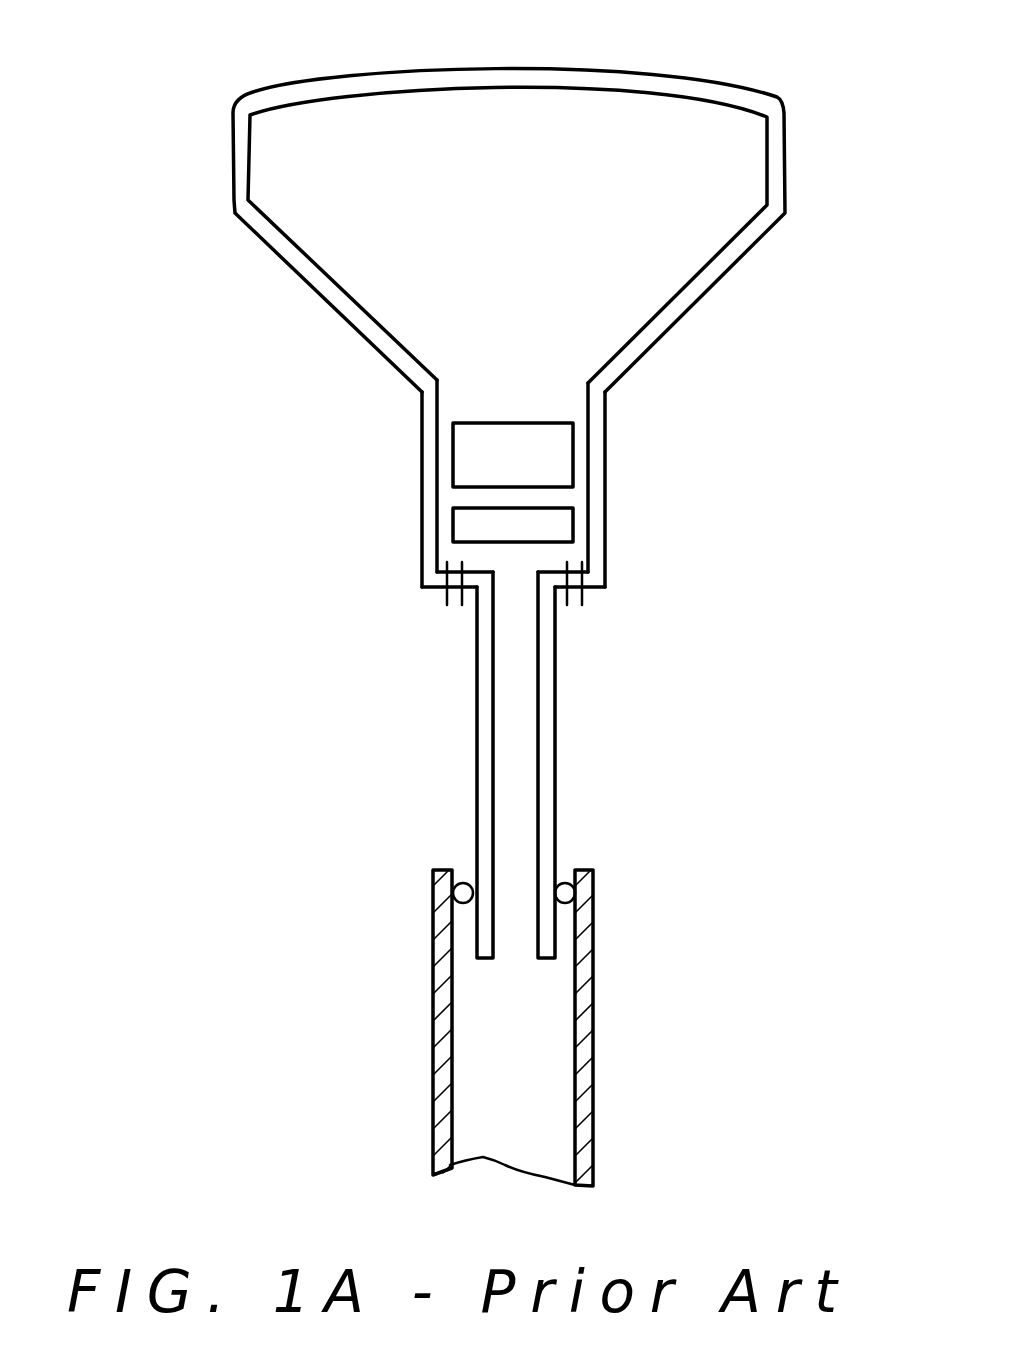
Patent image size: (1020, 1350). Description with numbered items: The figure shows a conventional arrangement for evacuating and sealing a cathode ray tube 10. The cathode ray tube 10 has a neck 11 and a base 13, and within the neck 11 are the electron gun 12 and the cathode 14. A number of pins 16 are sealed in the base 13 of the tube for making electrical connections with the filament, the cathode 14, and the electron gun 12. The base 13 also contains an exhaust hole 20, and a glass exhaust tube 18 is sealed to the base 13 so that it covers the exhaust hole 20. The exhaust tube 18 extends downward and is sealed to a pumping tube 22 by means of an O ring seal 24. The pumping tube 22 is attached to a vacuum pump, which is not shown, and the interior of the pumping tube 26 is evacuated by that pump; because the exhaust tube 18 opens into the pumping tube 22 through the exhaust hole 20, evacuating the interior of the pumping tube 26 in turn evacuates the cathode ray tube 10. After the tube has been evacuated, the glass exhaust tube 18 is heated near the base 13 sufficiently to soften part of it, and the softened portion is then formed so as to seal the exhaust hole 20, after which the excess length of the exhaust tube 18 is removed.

The cathode ray tube 10 is at (698, 80).
The neck 11 is at (420, 433).
The electron gun 12 is at (545, 452).
The base 13 is at (605, 588).
The cathode 14 is at (545, 527).
The pins 16 is at (453, 602).
The exhaust tube 18 is at (553, 733).
The exhaust hole 20 is at (512, 647).
The pumping tube 22 is at (585, 962).
The O ring seal 24 is at (458, 893).
The interior of the pumping tube 26 is at (512, 1042).